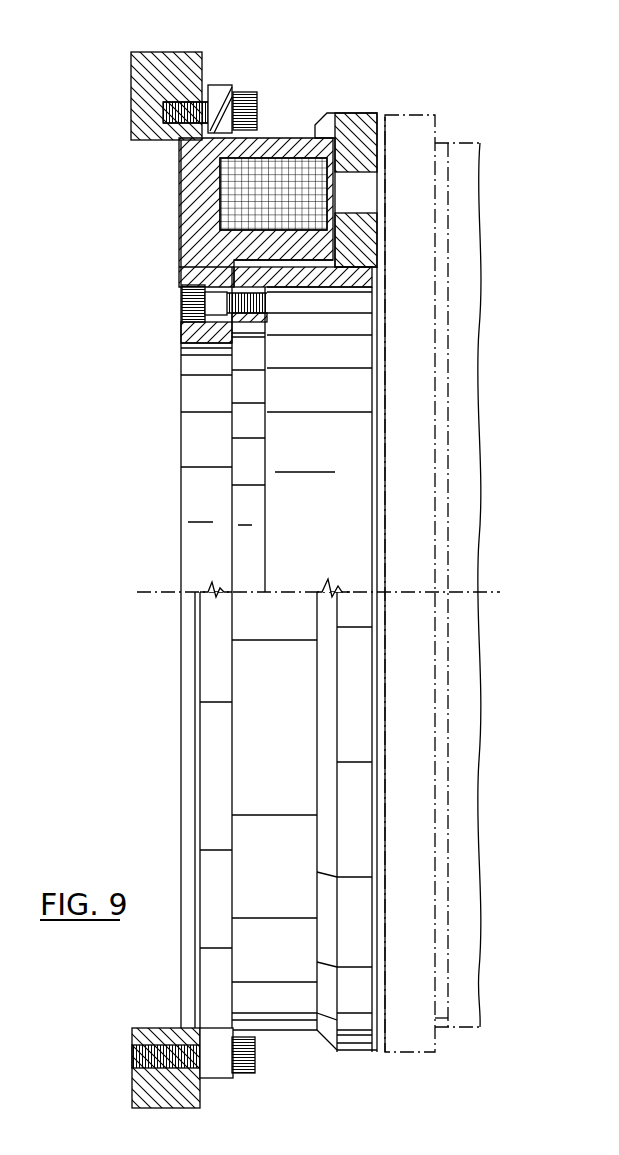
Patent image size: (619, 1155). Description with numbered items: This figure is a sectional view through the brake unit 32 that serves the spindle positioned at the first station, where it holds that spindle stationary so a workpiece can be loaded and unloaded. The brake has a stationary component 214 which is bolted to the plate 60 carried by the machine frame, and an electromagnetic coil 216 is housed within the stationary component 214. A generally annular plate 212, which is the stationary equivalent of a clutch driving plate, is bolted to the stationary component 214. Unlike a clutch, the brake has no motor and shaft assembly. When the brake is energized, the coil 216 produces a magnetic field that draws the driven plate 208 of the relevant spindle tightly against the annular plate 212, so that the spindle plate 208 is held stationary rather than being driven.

The brake unit 32 is at (398, 84).
The plate 60 is at (142, 93).
The driven plate 208 is at (415, 242).
The annular plate 212 is at (342, 131).
The stationary component 214 is at (168, 272).
The electromagnetic coil 216 is at (220, 200).